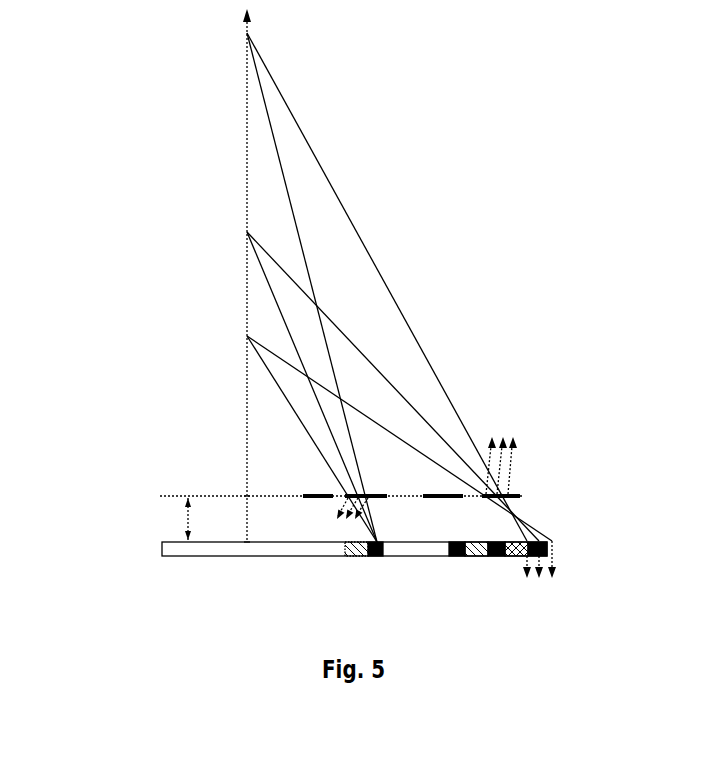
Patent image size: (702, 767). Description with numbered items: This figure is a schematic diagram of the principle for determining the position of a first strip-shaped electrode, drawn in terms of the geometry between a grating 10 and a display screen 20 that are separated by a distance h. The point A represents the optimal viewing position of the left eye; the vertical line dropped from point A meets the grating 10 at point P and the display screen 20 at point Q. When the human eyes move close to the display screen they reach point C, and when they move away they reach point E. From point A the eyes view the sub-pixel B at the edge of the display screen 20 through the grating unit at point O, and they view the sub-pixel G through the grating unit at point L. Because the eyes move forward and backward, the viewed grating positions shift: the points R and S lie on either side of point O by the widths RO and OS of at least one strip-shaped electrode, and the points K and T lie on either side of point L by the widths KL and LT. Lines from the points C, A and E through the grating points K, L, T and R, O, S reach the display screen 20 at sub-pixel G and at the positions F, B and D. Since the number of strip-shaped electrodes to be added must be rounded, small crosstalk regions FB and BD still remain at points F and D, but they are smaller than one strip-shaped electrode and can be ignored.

The grating 10 is at (520, 494).
The display screen 20 is at (182, 558).
The point E is at (377, 284).
The point A is at (383, 380).
The point C is at (391, 435).
The point P is at (241, 485).
The point Q is at (253, 533).
The distance h is at (193, 519).
The sub-pixel G is at (375, 561).
The point K is at (339, 518).
The point L is at (349, 518).
The point T is at (358, 518).
The point R is at (491, 457).
The point O is at (502, 457).
The point S is at (512, 457).
The point F is at (526, 575).
The sub-pixel B is at (538, 575).
The point D is at (551, 567).